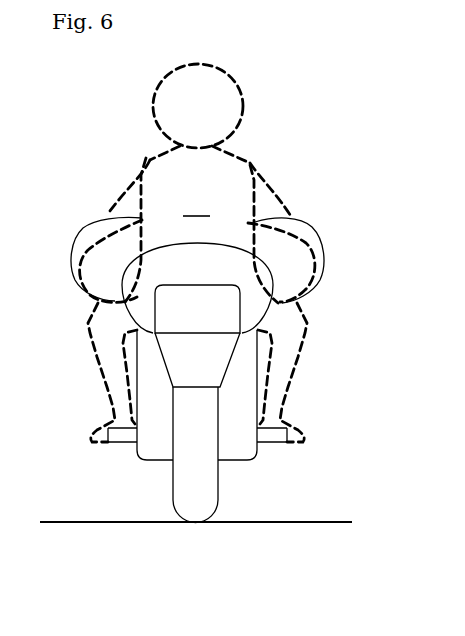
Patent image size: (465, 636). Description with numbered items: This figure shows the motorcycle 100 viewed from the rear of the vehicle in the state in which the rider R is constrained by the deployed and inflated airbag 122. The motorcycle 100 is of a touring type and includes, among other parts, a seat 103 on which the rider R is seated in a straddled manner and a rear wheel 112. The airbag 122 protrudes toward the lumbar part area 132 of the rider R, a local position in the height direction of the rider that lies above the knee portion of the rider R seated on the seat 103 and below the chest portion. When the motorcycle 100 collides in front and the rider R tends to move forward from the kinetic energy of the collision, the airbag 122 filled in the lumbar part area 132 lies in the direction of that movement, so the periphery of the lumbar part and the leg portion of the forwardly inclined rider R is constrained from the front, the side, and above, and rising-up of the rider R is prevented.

The motorcycle 100 is at (91, 167).
The seat 103 is at (138, 300).
The rear wheel 112 is at (193, 503).
The airbag 122 is at (83, 230).
The lumbar part area 132 is at (290, 252).
The rider R is at (247, 164).